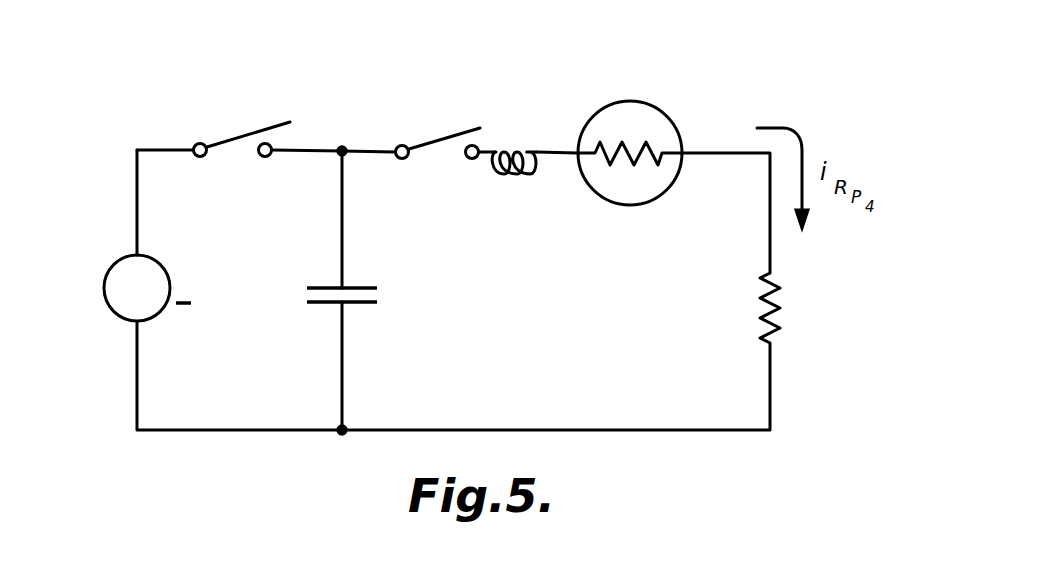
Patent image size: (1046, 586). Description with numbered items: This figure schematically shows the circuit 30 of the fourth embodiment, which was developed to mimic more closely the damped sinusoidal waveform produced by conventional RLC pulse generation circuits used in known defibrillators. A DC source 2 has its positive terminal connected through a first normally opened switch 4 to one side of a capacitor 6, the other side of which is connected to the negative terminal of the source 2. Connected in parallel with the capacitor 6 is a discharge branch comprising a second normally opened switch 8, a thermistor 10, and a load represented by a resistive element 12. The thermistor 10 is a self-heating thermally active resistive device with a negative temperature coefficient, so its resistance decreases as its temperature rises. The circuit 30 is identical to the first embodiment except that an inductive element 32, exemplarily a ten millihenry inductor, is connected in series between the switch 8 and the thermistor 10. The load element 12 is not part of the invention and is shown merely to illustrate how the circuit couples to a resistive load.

The DC source 2 is at (107, 276).
The first normally opened switch 4 is at (238, 138).
The capacitor 6 is at (385, 299).
The second normally opened switch 8 is at (444, 133).
The inductive element 32 is at (512, 145).
The thermistor 10 is at (677, 134).
The resistive element 12 is at (760, 303).
The circuit 30 is at (745, 82).